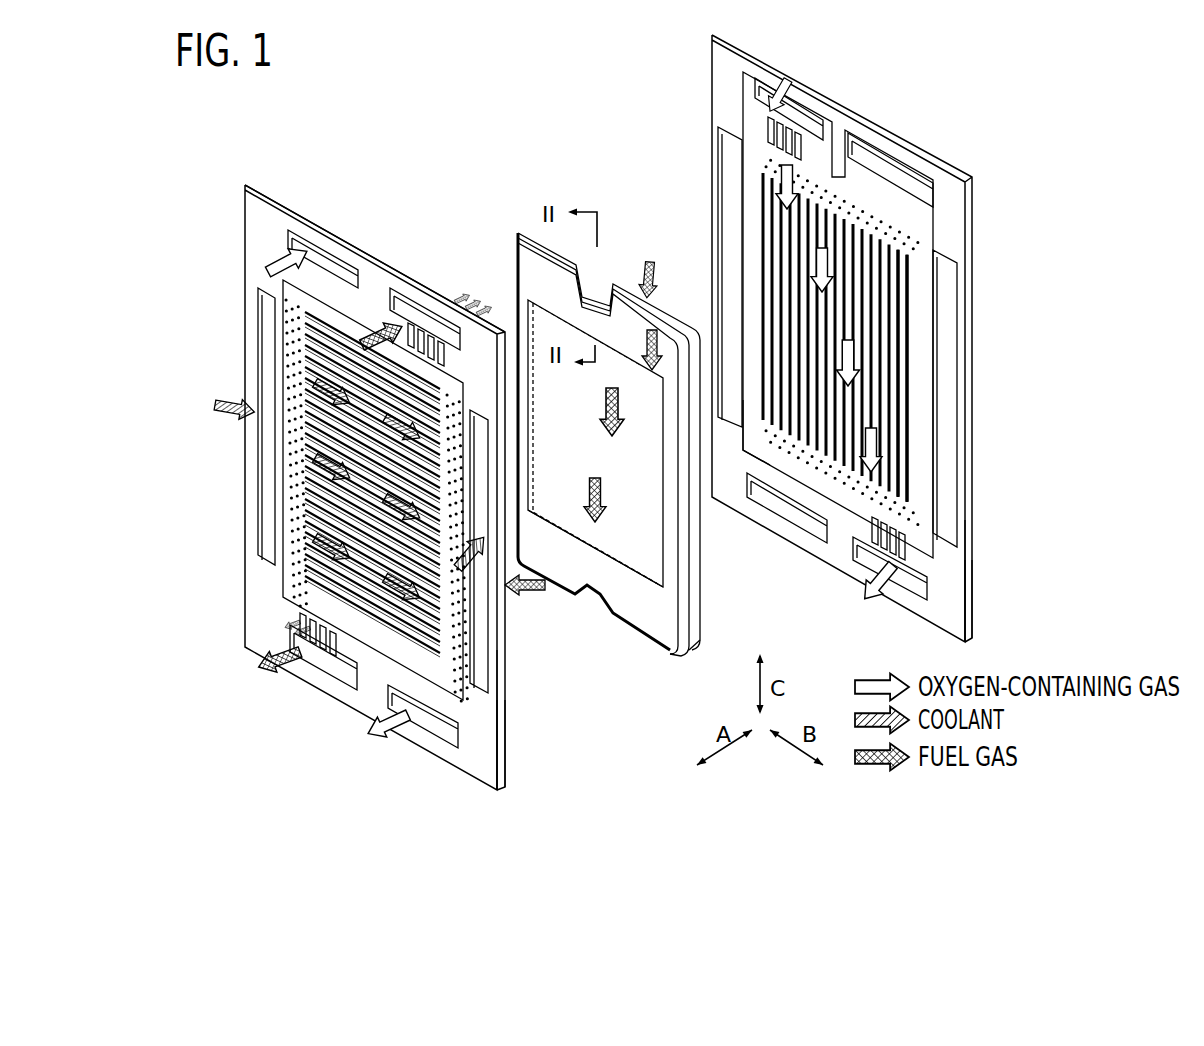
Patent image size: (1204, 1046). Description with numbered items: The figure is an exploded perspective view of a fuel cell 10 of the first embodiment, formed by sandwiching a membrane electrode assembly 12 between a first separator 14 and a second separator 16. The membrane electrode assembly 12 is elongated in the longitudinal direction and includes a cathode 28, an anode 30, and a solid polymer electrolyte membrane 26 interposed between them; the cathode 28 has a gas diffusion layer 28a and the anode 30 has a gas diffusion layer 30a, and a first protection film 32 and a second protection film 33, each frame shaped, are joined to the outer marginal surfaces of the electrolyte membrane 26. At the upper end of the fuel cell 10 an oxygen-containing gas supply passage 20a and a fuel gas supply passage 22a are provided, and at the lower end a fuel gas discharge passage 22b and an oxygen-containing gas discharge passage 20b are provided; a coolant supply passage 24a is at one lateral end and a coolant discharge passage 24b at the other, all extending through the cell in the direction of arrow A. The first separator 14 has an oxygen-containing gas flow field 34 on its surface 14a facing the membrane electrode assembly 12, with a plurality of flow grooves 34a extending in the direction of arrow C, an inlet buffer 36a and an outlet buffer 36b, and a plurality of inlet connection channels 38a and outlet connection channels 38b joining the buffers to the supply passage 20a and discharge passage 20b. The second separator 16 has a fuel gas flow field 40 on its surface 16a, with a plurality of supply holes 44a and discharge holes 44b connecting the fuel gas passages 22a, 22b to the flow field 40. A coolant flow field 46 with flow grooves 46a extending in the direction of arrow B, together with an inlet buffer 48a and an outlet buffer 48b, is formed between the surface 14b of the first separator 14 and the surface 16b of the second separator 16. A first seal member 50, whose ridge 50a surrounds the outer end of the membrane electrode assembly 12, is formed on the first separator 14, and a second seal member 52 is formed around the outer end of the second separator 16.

The fuel cell 10 is at (365, 69).
The membrane electrode assembly 12 is at (517, 232).
The first separator 14 is at (711, 34).
The surface of first separator 14a is at (955, 603).
The surface of first separator 14b is at (960, 624).
The second separator 16 is at (245, 184).
The surface of second separator 16a is at (505, 772).
The surface of second separator 16b is at (497, 745).
The oxygen-containing gas supply passage 20a is at (345, 268).
The oxygen-containing gas discharge passage 20b is at (440, 730).
The fuel gas supply passage 22a is at (440, 325).
The fuel gas discharge passage 22b is at (338, 670).
The coolant supply passage 24a is at (268, 322).
The coolant discharge passage 24b is at (483, 467).
The solid polymer electrolyte membrane 26 is at (675, 656).
The cathode 28 is at (624, 510).
The gas diffusion layer 28a is at (646, 542).
The anode 30 is at (612, 562).
The gas diffusion layer 30a is at (640, 548).
The first protection film 32 is at (662, 615).
The second protection film 33 is at (700, 614).
The oxygen-containing gas flow field 34 is at (785, 242).
The flow grooves 34a is at (905, 330).
The inlet buffer 36a is at (897, 232).
The outlet buffer 36b is at (907, 510).
The inlet connection channels 38a is at (775, 135).
The outlet connection channels 38b is at (877, 530).
The fuel gas flow field 40 is at (290, 440).
The supply holes 44a is at (452, 368).
The discharge holes 44b is at (297, 613).
The coolant flow field 46 is at (310, 405).
The flow grooves 46a is at (325, 495).
The inlet buffer 48a is at (285, 527).
The outlet buffer 48b is at (458, 612).
The first seal member 50 is at (965, 566).
The ridge 50a is at (747, 452).
The second seal member 52 is at (497, 718).